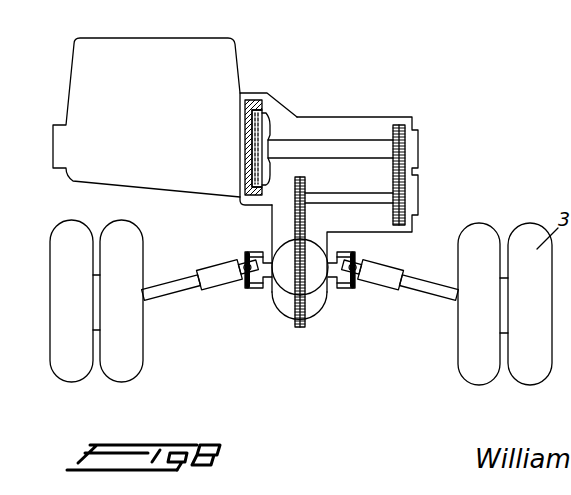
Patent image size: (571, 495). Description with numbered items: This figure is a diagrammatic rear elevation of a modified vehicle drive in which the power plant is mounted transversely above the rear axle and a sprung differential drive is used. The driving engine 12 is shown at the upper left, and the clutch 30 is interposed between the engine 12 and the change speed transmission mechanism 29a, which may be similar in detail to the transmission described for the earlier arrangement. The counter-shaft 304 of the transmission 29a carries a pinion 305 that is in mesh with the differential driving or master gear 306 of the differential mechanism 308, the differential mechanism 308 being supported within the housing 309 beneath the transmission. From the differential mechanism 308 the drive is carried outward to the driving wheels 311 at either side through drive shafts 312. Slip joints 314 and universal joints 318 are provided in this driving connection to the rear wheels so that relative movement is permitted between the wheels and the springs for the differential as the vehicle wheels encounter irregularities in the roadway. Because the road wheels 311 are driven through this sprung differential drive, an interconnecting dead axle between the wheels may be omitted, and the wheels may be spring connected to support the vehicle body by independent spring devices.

The driving engine 12 is at (172, 58).
The clutch 30 is at (258, 104).
The change speed transmission mechanism 29a is at (384, 124).
The counter-shaft 304 is at (381, 198).
The pinion 305 is at (306, 188).
The differential driving gear 306 is at (302, 246).
The differential mechanism 308 is at (290, 288).
The housing 309 is at (318, 298).
The driving wheels 311 is at (73, 253).
The drive shafts 312 is at (177, 285).
The slip joints 314 is at (217, 282).
The universal joints 318 is at (248, 262).